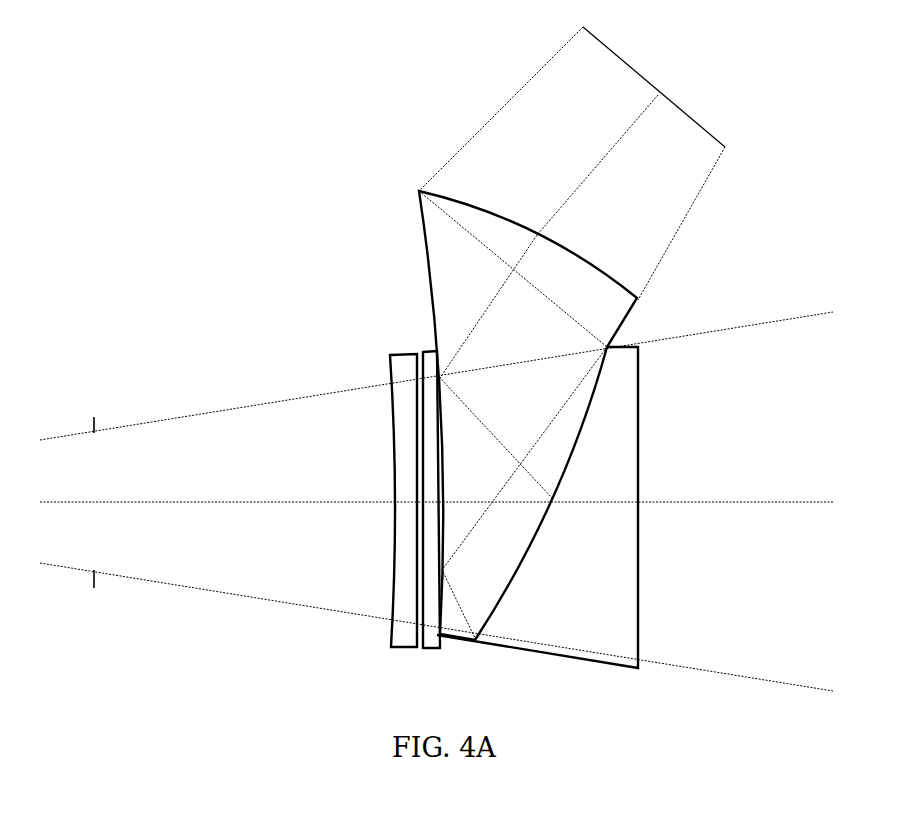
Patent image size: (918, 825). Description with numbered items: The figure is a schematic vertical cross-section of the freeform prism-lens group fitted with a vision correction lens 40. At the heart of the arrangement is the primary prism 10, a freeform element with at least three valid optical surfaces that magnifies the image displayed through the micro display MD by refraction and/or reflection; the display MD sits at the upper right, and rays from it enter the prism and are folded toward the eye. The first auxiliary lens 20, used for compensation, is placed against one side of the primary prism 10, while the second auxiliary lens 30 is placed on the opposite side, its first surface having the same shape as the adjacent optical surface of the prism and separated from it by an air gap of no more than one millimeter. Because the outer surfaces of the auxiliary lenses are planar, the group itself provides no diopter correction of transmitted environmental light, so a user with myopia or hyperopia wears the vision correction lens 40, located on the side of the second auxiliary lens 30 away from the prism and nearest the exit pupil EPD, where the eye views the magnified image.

The primary prism 10 is at (416, 204).
The first auxiliary lens 20 is at (585, 659).
The second auxiliary lens 30 is at (430, 649).
The vision correction lens 40 is at (403, 648).
The micro display MD is at (572, 159).
The exit pupil EPD is at (436, 501).